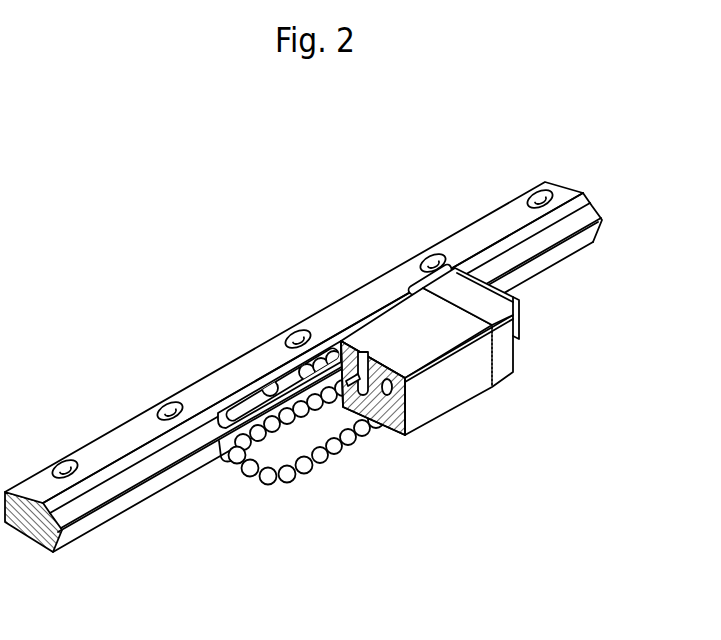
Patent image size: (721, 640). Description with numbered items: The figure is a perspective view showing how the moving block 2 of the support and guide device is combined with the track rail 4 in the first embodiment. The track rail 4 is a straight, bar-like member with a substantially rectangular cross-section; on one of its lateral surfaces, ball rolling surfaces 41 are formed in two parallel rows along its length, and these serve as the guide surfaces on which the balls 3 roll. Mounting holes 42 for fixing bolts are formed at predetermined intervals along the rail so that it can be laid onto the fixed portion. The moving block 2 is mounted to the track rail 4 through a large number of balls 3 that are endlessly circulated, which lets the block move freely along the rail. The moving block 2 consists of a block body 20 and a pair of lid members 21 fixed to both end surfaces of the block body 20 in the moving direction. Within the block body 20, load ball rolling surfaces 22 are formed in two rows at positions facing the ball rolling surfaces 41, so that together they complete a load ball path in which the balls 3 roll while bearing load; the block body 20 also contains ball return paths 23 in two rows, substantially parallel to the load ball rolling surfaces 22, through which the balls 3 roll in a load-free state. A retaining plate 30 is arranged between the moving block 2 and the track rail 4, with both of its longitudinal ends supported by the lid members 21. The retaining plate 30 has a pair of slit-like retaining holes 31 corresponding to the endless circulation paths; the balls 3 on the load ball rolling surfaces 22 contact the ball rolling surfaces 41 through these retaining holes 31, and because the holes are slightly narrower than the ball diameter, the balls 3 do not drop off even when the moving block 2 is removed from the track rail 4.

The moving block 2 is at (394, 374).
The balls 3 is at (321, 462).
The track rail 4 is at (339, 360).
The block body 20 is at (409, 377).
The lid member 21 is at (516, 352).
The load ball rolling surface 22 is at (337, 356).
The ball return path 23 is at (407, 418).
The retaining plate 30 is at (321, 350).
The retaining hole 31 is at (270, 390).
The ball rolling surface 41 is at (72, 509).
The mounting hole 42 is at (68, 468).